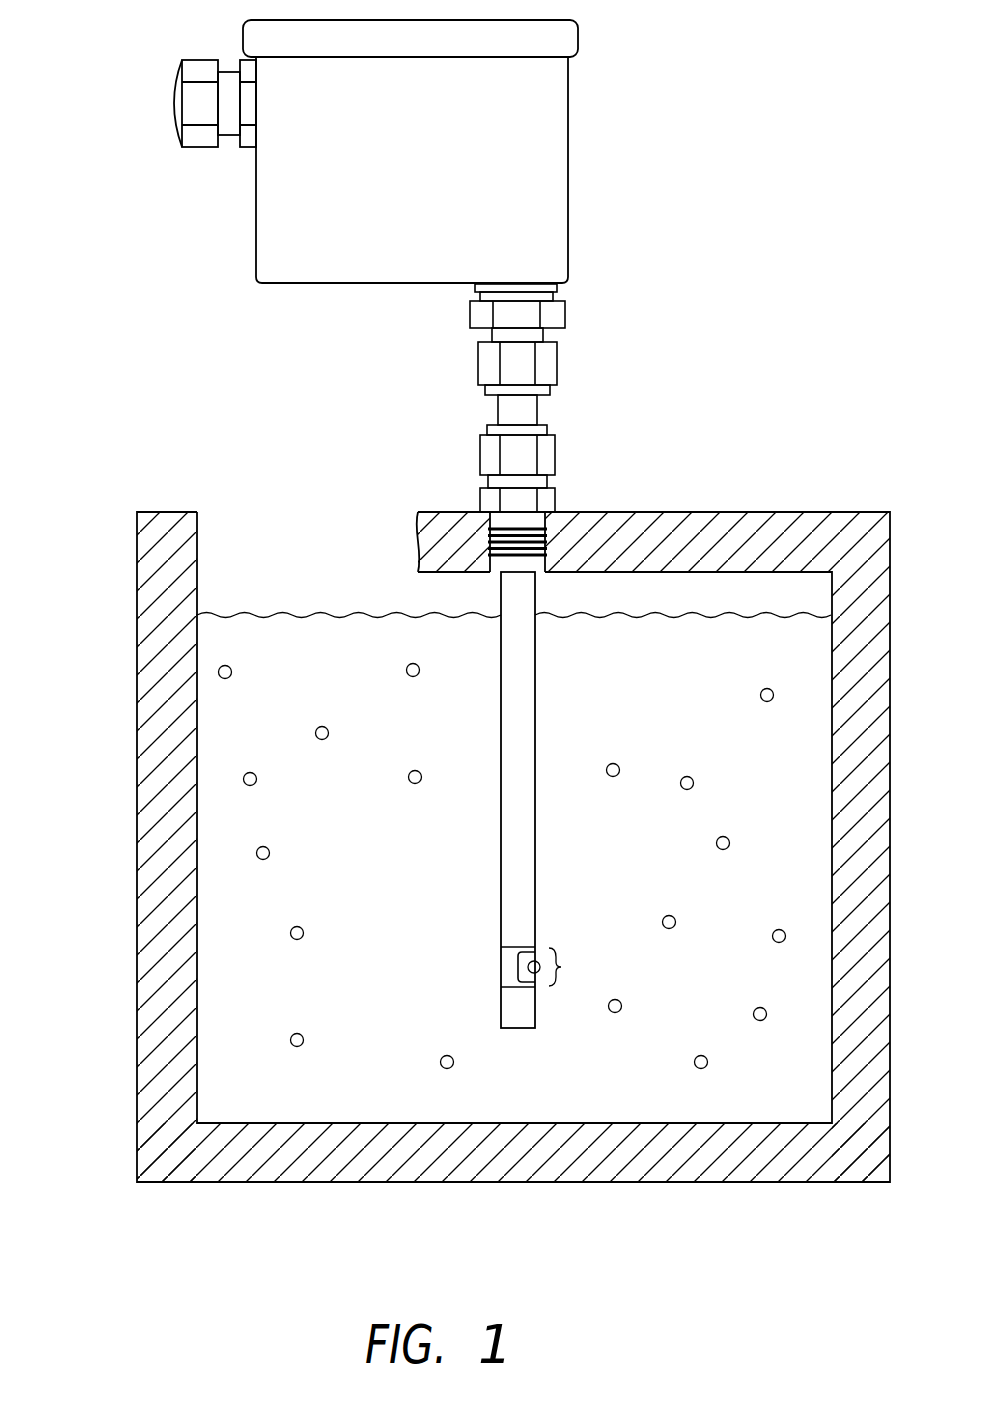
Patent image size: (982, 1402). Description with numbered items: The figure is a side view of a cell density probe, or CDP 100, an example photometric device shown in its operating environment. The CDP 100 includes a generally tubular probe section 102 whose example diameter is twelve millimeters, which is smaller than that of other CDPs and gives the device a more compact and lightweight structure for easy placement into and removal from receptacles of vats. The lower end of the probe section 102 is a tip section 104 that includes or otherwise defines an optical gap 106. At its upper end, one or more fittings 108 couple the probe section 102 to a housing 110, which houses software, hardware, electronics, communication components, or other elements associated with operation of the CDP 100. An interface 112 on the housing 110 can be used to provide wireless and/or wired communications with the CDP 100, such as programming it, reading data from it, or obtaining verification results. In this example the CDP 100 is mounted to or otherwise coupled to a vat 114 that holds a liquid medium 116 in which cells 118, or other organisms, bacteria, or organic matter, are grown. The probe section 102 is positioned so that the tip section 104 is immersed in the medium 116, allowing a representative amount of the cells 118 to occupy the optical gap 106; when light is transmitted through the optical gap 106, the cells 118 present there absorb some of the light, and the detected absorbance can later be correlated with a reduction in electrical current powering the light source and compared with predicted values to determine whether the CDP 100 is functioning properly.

The CDP 100 is at (665, 135).
The probe section 102 is at (535, 700).
The tip section 104 is at (501, 965).
The optical gap 106 is at (561, 967).
The fittings 108 is at (555, 455).
The housing 110 is at (390, 283).
The interface 112 is at (172, 103).
The vat 114 is at (137, 597).
The liquid medium 116 is at (299, 643).
The cells 118 is at (228, 666).